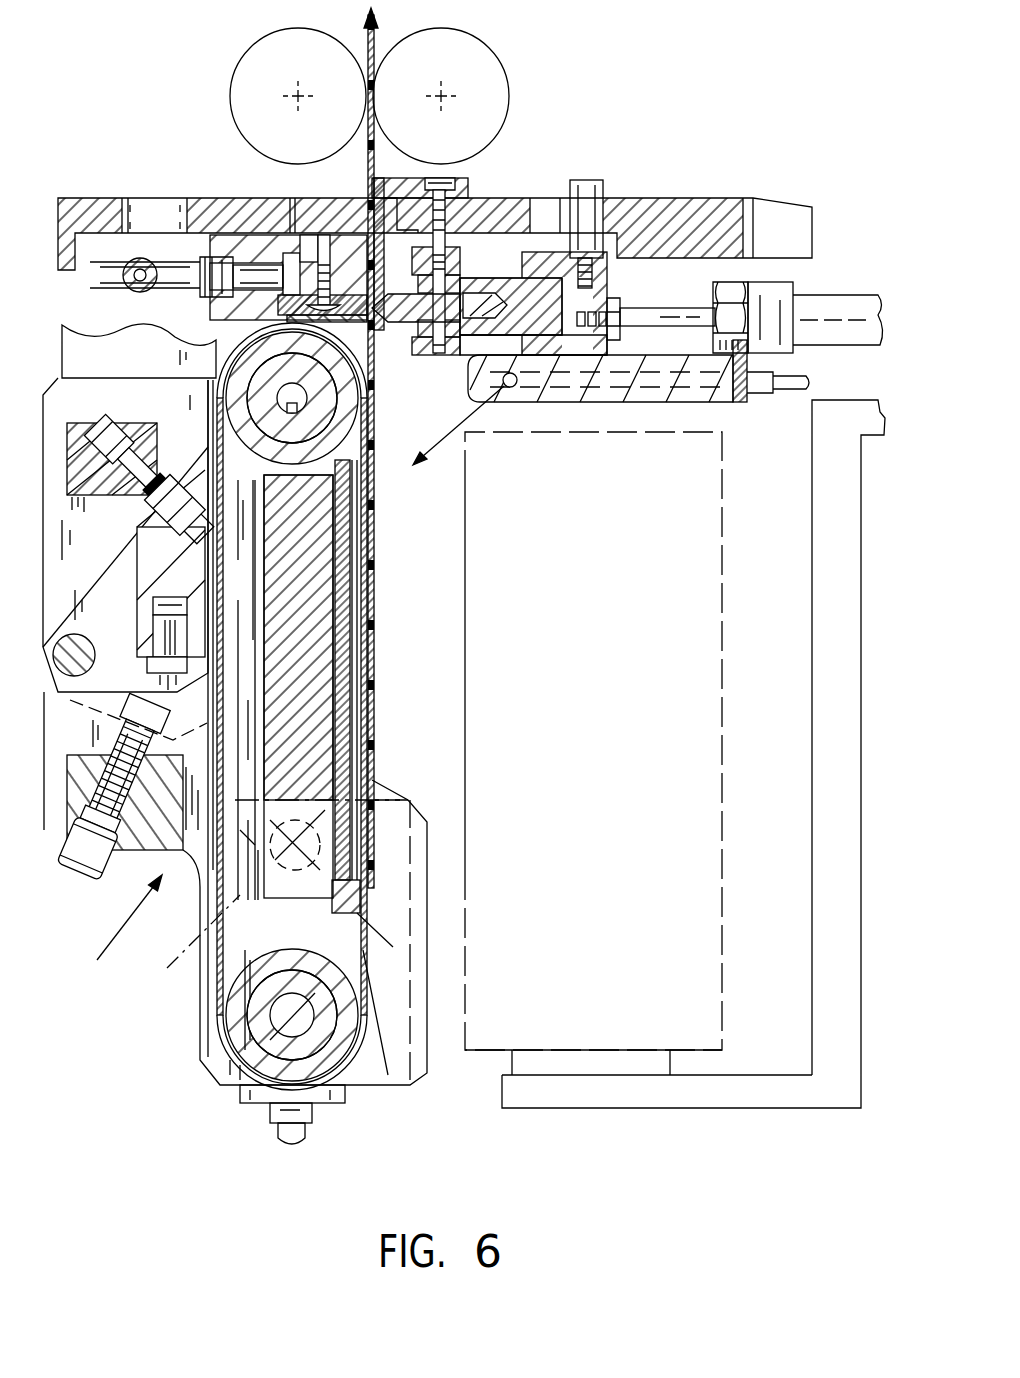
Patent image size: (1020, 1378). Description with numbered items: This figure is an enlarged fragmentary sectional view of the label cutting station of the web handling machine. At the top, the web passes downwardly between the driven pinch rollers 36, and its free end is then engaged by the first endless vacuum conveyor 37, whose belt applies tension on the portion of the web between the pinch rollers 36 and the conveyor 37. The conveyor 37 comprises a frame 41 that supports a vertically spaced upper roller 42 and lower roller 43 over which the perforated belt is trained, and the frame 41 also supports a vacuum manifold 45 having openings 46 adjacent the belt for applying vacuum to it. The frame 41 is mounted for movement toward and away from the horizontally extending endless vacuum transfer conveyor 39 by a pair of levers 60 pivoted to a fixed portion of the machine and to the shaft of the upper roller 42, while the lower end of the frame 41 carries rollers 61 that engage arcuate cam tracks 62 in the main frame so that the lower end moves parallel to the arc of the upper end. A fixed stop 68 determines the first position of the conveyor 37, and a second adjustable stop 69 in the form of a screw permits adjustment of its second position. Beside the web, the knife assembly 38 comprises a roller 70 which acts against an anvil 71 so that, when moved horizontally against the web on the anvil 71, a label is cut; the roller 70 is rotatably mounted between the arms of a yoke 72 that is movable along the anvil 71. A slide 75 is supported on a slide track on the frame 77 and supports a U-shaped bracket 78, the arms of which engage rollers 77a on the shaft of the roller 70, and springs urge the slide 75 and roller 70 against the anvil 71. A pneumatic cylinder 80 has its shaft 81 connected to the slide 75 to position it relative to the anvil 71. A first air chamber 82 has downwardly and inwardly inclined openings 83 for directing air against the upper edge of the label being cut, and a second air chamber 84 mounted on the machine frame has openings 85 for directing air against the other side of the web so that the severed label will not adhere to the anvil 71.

The driven pinch rollers 36 is at (233, 76).
The endless vacuum conveyor 37 is at (111, 942).
The knife assembly 38 is at (632, 178).
The endless vacuum transfer conveyor 39 is at (705, 652).
The frame 41 is at (198, 1037).
The upper roller 42 is at (237, 397).
The lower roller 43 is at (243, 1033).
The vacuum manifold 45 is at (356, 660).
The openings 46 is at (352, 867).
The levers 60 is at (208, 445).
The rollers 61 is at (188, 941).
The arcuate cam tracks 62 is at (395, 975).
The fixed stop 68 is at (127, 500).
The adjustable stop 69 is at (67, 857).
The roller 70 is at (383, 320).
The anvil 71 is at (392, 288).
The yoke 72 is at (460, 247).
The slide 75 is at (540, 262).
The frame 77 is at (710, 212).
The rollers 77a is at (495, 300).
The U-shaped bracket 78 is at (493, 332).
The pneumatic cylinder 80 is at (838, 303).
The shaft 81 is at (650, 318).
The first air chamber 82 is at (623, 398).
The openings 83 is at (488, 405).
The second air chamber 84 is at (310, 280).
The openings 85 is at (362, 285).